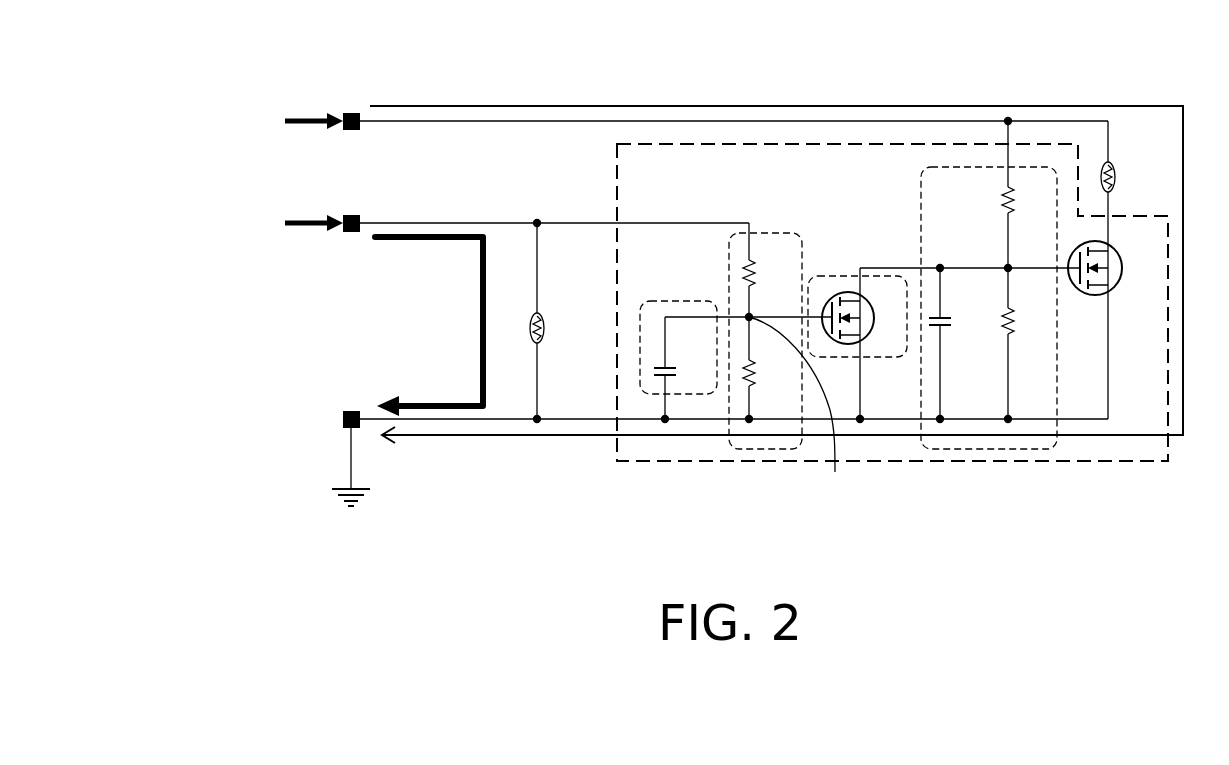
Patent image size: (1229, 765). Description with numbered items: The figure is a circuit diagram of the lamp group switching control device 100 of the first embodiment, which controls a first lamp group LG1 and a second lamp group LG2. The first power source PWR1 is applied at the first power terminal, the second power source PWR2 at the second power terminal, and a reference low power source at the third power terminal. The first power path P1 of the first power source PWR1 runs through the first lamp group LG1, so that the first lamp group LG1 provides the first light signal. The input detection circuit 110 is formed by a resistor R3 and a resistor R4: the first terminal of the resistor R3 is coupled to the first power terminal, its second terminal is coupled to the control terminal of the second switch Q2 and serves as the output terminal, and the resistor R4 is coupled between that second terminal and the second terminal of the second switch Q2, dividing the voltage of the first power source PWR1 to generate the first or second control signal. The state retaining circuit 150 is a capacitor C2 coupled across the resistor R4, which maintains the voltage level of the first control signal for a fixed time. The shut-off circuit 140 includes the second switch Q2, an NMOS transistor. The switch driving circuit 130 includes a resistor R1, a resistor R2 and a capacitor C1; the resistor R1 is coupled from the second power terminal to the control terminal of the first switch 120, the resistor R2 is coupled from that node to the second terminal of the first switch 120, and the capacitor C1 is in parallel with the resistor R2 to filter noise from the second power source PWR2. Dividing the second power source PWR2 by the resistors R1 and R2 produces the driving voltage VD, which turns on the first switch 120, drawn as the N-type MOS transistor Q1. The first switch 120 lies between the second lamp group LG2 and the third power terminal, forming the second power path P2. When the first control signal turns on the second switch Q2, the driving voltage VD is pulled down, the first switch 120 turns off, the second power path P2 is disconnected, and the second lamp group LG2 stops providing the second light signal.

The lamp group switching control device 100 is at (1107, 462).
The input detection circuit 110 is at (765, 309).
The first switch 120 is at (1109, 330).
The switch driving circuit 130 is at (954, 284).
The shut-off circuit 140 is at (857, 319).
The state retaining circuit 150 is at (678, 331).
The first power path P1 is at (480, 301).
The second power path P2 is at (445, 437).
The first power source PWR1 is at (281, 223).
The second power source PWR2 is at (281, 121).
The first lamp group LG1 is at (560, 321).
The second lamp group LG2 is at (1133, 181).
The first switch Q1 is at (1082, 325).
The second switch Q2 is at (862, 343).
The resistor R1 is at (1024, 193).
The resistor R2 is at (1025, 345).
The resistor R3 is at (765, 270).
The resistor R4 is at (765, 368).
The capacitor C1 is at (957, 345).
The capacitor C2 is at (682, 368).
The driving voltage VD is at (970, 255).